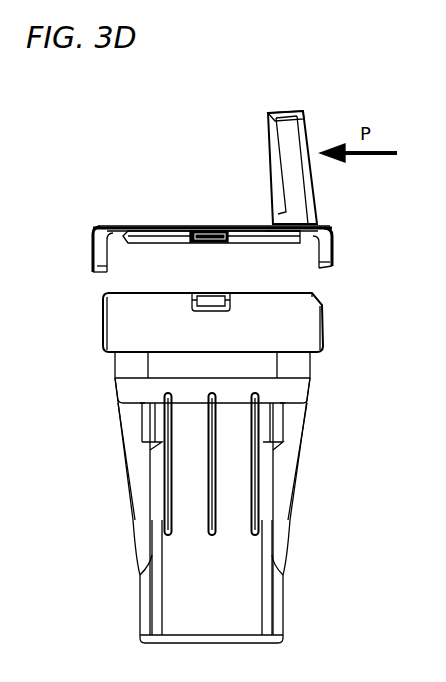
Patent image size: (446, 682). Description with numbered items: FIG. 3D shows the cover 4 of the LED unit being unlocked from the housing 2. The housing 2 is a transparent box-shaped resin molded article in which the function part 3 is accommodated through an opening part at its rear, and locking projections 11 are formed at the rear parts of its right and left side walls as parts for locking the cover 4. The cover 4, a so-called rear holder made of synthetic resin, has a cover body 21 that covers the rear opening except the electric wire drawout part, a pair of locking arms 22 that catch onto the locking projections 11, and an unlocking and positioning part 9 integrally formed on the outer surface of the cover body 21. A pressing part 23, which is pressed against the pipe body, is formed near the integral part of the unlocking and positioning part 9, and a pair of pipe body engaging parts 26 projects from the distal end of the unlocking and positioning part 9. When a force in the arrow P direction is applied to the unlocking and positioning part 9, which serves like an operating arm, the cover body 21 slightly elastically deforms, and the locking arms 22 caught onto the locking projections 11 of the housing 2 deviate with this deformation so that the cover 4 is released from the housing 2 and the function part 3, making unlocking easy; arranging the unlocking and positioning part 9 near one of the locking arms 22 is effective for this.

The housing 2 is at (193, 598).
The function part 3 is at (193, 527).
The cover 4 is at (150, 224).
The unlocking and positioning part 9 is at (290, 150).
The locking projections 11 is at (118, 333).
The cover body 21 is at (233, 243).
The locking arms 22 is at (95, 246).
The pressing part 23 is at (265, 224).
The pipe body engaging parts 26 is at (283, 112).